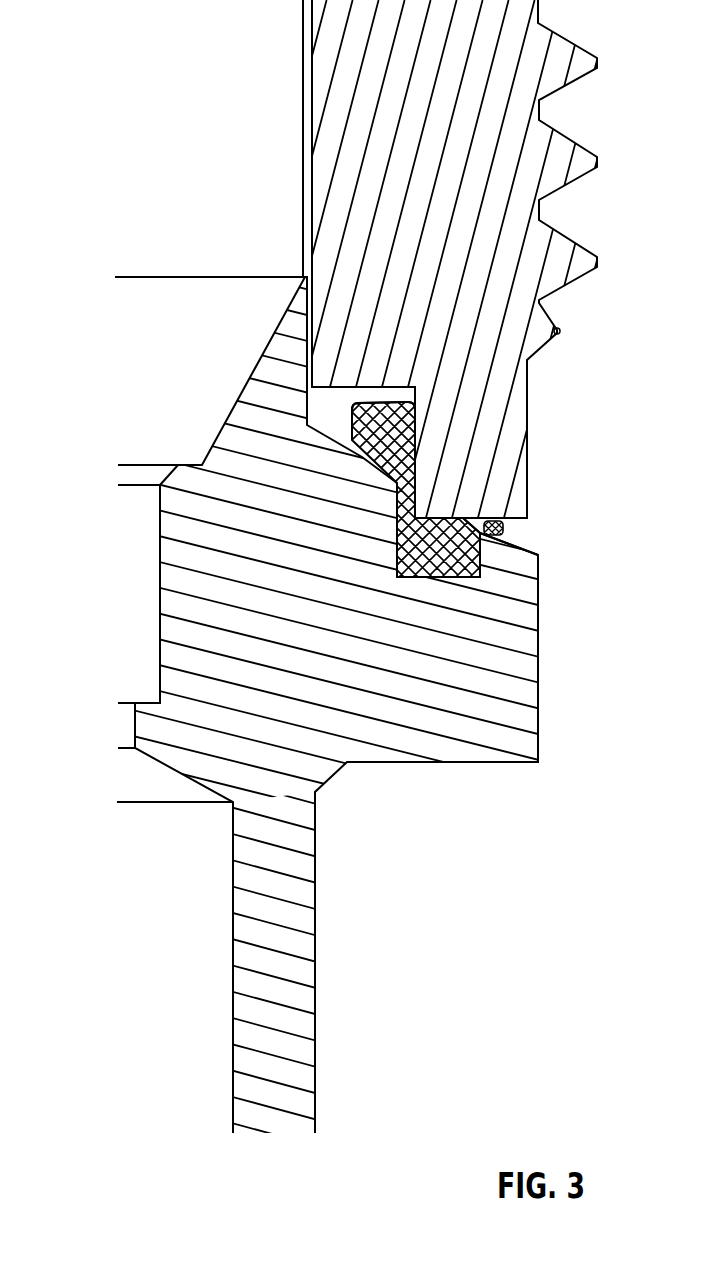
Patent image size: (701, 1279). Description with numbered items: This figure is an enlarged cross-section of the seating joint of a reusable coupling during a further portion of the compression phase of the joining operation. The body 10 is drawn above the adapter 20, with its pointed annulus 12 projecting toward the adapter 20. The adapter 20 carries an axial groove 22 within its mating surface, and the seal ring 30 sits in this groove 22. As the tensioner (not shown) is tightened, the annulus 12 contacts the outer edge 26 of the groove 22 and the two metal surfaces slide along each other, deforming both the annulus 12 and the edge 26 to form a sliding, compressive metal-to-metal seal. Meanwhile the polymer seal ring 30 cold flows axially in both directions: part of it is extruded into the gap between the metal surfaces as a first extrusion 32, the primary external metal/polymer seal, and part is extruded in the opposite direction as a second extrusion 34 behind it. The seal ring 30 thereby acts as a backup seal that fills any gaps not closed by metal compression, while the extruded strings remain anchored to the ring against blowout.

The body 10 is at (530, 240).
The annulus 12 is at (477, 520).
The adapter 20 is at (392, 745).
The axial groove 22 is at (474, 578).
The outer edge 26 is at (484, 548).
The seal ring 30 is at (488, 538).
The first extrusion 32 is at (503, 532).
The second extrusion 34 is at (352, 407).